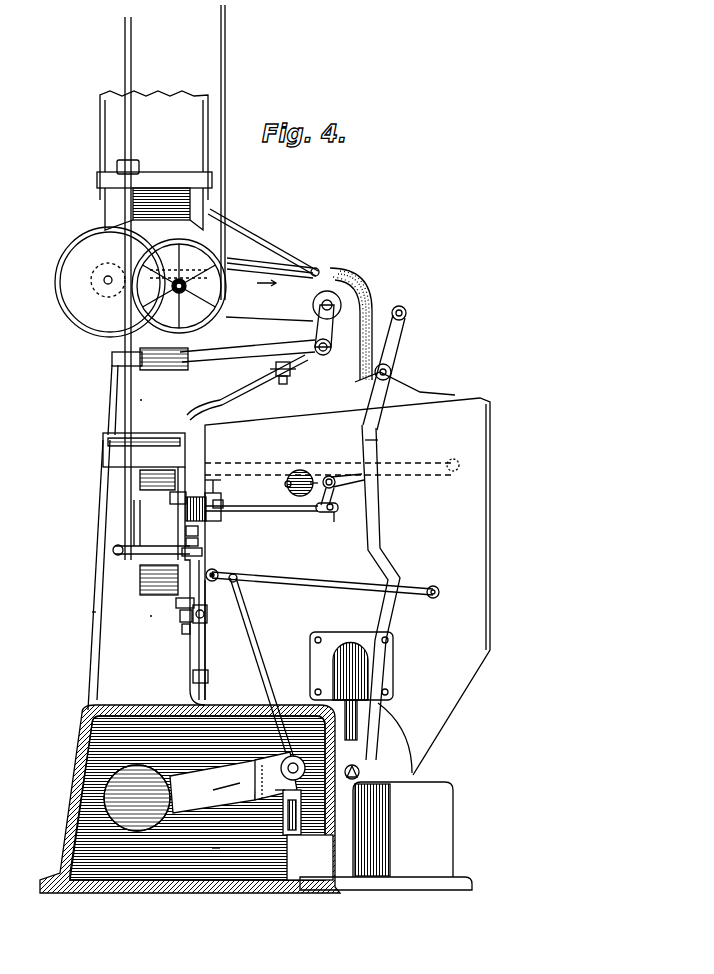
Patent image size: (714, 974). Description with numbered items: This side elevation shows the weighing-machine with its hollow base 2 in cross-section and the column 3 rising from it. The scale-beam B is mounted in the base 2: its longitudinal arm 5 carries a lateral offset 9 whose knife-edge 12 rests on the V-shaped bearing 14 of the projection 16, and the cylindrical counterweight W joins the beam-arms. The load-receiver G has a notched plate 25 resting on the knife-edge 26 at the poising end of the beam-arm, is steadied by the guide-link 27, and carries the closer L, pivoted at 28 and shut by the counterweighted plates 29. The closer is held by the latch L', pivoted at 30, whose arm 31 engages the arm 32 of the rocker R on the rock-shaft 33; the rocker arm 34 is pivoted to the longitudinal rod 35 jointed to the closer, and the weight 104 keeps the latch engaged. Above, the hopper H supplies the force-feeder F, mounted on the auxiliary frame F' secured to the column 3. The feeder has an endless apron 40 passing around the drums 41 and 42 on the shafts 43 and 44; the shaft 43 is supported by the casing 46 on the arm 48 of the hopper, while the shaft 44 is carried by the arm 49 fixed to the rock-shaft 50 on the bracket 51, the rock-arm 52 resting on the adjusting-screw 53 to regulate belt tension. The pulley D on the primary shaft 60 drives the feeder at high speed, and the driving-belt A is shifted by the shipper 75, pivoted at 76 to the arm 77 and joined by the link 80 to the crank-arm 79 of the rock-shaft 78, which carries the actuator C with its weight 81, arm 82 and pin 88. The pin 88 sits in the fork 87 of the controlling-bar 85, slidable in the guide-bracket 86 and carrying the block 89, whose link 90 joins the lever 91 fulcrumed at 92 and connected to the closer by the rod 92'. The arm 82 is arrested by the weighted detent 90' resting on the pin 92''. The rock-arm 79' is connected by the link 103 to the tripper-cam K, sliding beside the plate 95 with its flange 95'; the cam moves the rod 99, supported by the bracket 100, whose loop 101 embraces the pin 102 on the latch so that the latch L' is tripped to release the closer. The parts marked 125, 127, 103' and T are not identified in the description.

The driving-belt A is at (227, 72).
The supply hopper H is at (160, 180).
The arm 48 is at (185, 200).
The arm 77 is at (122, 380).
The pivot 76 is at (118, 362).
The belt-shipper 75 is at (112, 398).
The casing 46 is at (72, 246).
The drum 41 is at (92, 282).
The secondary shaft 43 is at (102, 286).
The pulley D is at (165, 252).
The primary shaft 60 is at (178, 288).
The force-feeder F is at (269, 292).
The rod 125 is at (255, 246).
The endless band 40 is at (302, 262).
The roller 127 is at (318, 270).
The drum 42 is at (333, 296).
The arm 49 is at (318, 327).
The rock-shaft 50 is at (326, 362).
The rock-arm 52 is at (247, 345).
The bracket 51 is at (247, 387).
The adjusting-screw 53 is at (277, 373).
The auxiliary frame F' is at (155, 393).
The shaft 44 is at (350, 287).
The rocker arm 34 is at (402, 336).
The rock-shaft 33 is at (392, 372).
The longitudinal rod 35 is at (388, 552).
The rocker arm 32 is at (372, 430).
The rocker R is at (400, 395).
The load-receiver G is at (490, 512).
The guide-link 27 is at (452, 460).
The weight 104 is at (300, 470).
The latch L' is at (330, 465).
The pivot 30 is at (337, 487).
The latch arm 31 is at (340, 477).
The link 103' is at (351, 508).
The loop 101 is at (325, 516).
The pin 102 is at (335, 524).
The rod 99 is at (280, 506).
The plate 95 is at (225, 475).
The flange 95' is at (239, 469).
The tripper-cam K is at (214, 497).
The bracket 100 is at (224, 502).
The link 103 is at (162, 496).
The actuator C is at (128, 505).
The link 80 is at (160, 460).
The column 3 is at (95, 612).
The frame T is at (150, 618).
The crank-arm 79 is at (129, 537).
The rock-shaft 78 is at (112, 548).
The rock-arm 79' is at (159, 523).
The weight 81 is at (200, 532).
The bifurcation 87 is at (200, 542).
The pin 88 is at (206, 547).
The lever 91 is at (319, 579).
The fulcrum 92 is at (441, 581).
The link 92' is at (262, 670).
The controlling-bar 85 is at (206, 640).
The arm 82 is at (192, 590).
The block 89 is at (207, 617).
The guide-bracket 86 is at (208, 678).
The link 90 is at (161, 608).
The detent 90' is at (171, 621).
The pin 92'' is at (168, 638).
The base 2 is at (80, 790).
The counterweight W is at (137, 798).
The scale-beam B is at (213, 786).
The lateral offset 9 is at (222, 796).
The beam-arm 5 is at (259, 776).
The knife-edge 12 is at (283, 713).
The V-shaped bearing 14 is at (290, 805).
The projection 16 is at (310, 857).
The pivot 28 is at (282, 795).
The counterweighted plate 29 is at (215, 850).
The notched plate 25 is at (365, 750).
The knife-edge 26 is at (360, 770).
The closer L is at (386, 836).